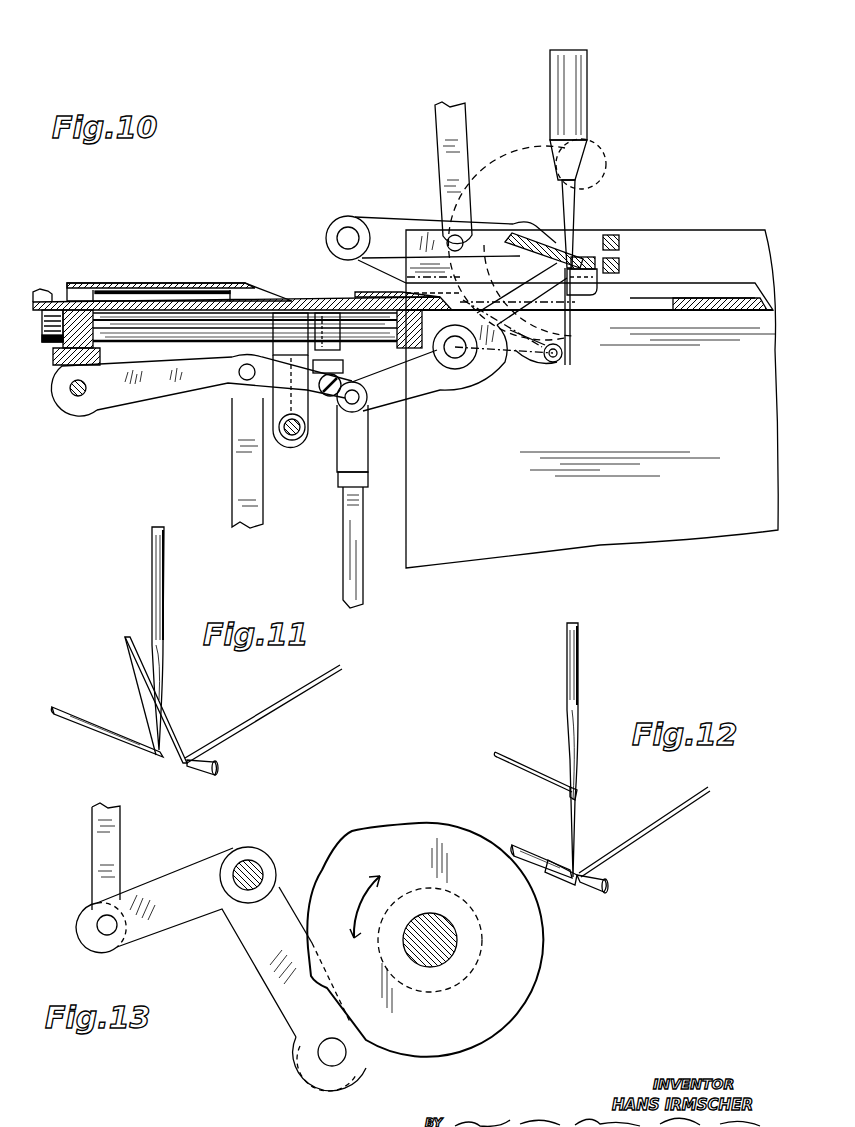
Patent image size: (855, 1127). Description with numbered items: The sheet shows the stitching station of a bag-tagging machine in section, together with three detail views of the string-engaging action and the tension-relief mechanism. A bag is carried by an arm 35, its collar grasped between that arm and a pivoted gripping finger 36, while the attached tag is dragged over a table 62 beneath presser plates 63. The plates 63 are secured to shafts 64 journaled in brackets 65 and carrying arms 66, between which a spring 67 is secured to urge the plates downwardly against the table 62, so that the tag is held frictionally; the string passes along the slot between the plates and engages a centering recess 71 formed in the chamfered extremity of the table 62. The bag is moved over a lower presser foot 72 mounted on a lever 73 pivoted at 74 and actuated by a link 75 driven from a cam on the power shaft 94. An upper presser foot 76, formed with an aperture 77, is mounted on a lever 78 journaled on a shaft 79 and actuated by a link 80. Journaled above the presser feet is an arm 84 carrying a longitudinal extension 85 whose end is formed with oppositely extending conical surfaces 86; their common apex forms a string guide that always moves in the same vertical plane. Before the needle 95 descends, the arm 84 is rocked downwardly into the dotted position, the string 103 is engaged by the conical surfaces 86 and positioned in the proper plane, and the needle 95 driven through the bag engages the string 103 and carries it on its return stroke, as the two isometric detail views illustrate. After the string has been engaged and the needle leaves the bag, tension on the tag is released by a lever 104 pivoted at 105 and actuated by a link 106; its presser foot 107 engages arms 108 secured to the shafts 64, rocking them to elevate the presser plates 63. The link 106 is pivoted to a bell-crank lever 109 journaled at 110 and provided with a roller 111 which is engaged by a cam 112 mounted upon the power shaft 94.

In FIG. 10, the arm 35 is at (620, 265).
In FIG. 10, the pivoted gripping finger 36 is at (620, 240).
In FIG. 10, the table 62 is at (62, 302).
In FIG. 10, the presser plates 63 is at (212, 283).
In FIG. 10, the shafts 64 is at (133, 342).
In FIG. 10, the brackets 65 is at (55, 348).
In FIG. 10, the arms 66 is at (304, 442).
In FIG. 10, the spring 67 is at (287, 441).
In FIG. 10, the centering recess 71 is at (400, 282).
In FIG. 10, the lower presser foot 72 is at (583, 291).
In FIG. 10, the lever 73 is at (440, 388).
In FIG. 10, the pivot 74 is at (463, 352).
In FIG. 10, the link 75 is at (355, 523).
In FIG. 10, the upper presser foot 76 is at (596, 262).
In FIG. 10, the aperture 77 is at (576, 246).
In FIG. 10, the lever 78 is at (425, 222).
In FIG. 10, the shaft 79 is at (349, 216).
In FIG. 10, the link 80 is at (455, 150).
In FIG. 10, the arm 84 is at (493, 195).
In FIG. 10, the longitudinal extension 85 is at (553, 363).
In FIG. 11, the longitudinal extension 85 is at (100, 732).
In FIG. 12, the longitudinal extension 85 is at (540, 857).
In FIG. 11, the conical surfaces 86 is at (173, 762).
In FIG. 13, the power shaft 94 is at (440, 942).
In FIG. 10, the needle 95 is at (572, 190).
In FIG. 11, the needle 95 is at (163, 590).
In FIG. 12, the needle 95 is at (567, 690).
In FIG. 11, the string 103 is at (283, 705).
In FIG. 12, the string 103 is at (683, 800).
In FIG. 10, the lever 104 is at (158, 384).
In FIG. 10, the pivot 105 is at (76, 393).
In FIG. 10, the link 106 is at (236, 464).
In FIG. 13, the link 106 is at (102, 867).
In FIG. 10, the presser foot 107 is at (343, 366).
In FIG. 10, the arms 108 is at (322, 333).
In FIG. 13, the bell-crank lever 109 is at (175, 885).
In FIG. 13, the journal 110 is at (260, 867).
In FIG. 13, the roller 111 is at (350, 1073).
In FIG. 13, the cam 112 is at (418, 1031).